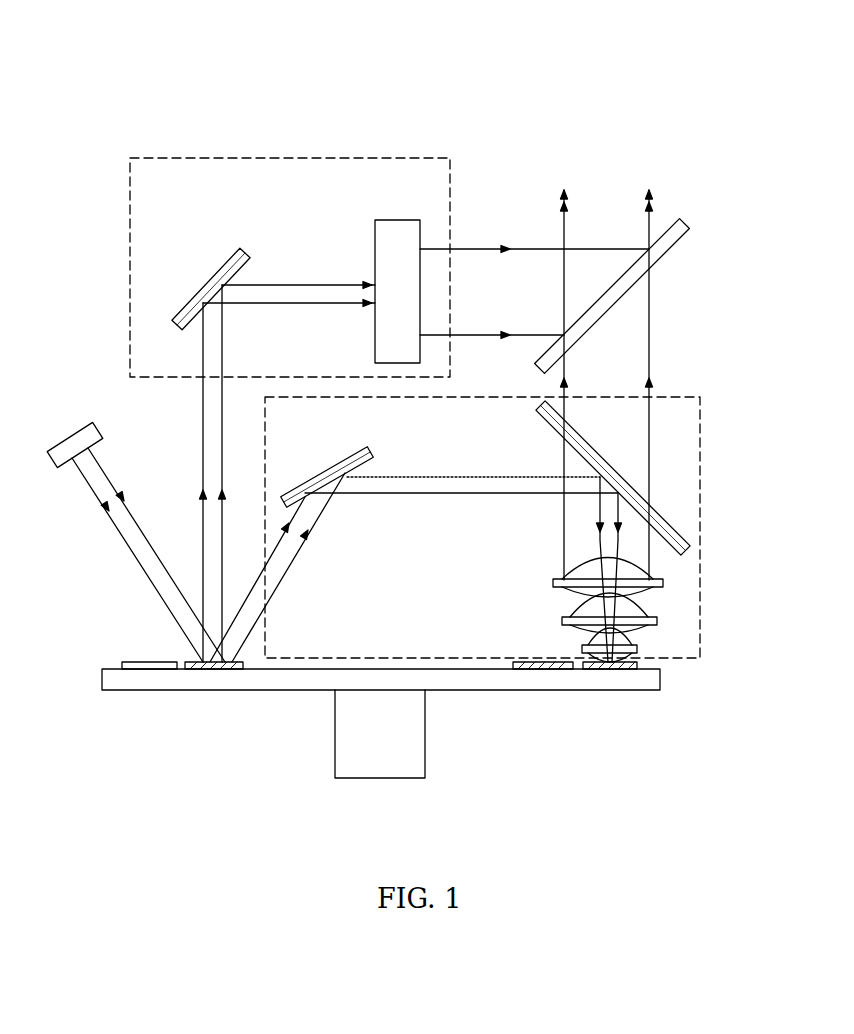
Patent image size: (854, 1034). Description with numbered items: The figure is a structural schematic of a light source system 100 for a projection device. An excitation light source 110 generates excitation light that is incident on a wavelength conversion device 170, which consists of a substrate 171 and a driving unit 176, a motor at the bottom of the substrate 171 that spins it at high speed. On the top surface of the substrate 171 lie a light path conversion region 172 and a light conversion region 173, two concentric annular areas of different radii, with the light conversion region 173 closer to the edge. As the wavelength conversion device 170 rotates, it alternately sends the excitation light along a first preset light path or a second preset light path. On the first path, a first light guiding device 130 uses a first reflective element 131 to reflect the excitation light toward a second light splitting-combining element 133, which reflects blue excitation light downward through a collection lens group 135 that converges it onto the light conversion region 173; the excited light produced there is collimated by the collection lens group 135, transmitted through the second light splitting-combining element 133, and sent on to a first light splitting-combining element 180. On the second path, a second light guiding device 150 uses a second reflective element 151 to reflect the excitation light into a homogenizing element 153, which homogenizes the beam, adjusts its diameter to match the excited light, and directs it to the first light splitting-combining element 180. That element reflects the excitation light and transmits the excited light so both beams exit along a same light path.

The light source system 100 is at (413, 27).
The excitation light source 110 is at (76, 440).
The first light guiding device 130 is at (666, 397).
The first reflective element 131 is at (340, 470).
The second light splitting-combining element 133 is at (545, 415).
The collection lens group 135 is at (585, 648).
The second light guiding device 150 is at (232, 158).
The second reflective element 151 is at (218, 272).
The homogenizing element 153 is at (397, 230).
The wavelength conversion device 170 is at (384, 695).
The substrate 171 is at (620, 682).
The light path conversion region 172 is at (228, 669).
The light conversion region 173 is at (148, 662).
The driving unit 176 is at (413, 733).
The first light splitting-combining element 180 is at (663, 247).